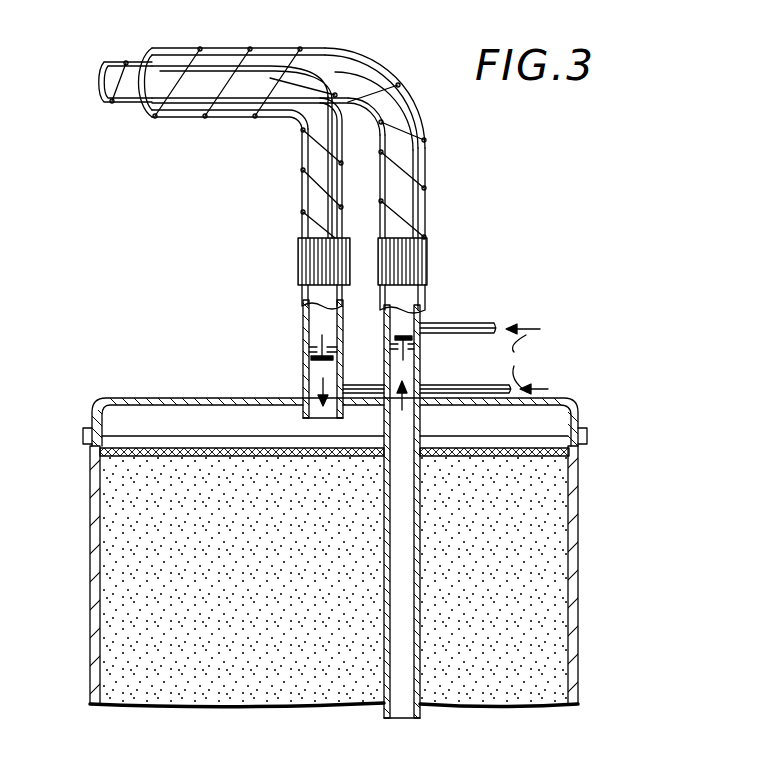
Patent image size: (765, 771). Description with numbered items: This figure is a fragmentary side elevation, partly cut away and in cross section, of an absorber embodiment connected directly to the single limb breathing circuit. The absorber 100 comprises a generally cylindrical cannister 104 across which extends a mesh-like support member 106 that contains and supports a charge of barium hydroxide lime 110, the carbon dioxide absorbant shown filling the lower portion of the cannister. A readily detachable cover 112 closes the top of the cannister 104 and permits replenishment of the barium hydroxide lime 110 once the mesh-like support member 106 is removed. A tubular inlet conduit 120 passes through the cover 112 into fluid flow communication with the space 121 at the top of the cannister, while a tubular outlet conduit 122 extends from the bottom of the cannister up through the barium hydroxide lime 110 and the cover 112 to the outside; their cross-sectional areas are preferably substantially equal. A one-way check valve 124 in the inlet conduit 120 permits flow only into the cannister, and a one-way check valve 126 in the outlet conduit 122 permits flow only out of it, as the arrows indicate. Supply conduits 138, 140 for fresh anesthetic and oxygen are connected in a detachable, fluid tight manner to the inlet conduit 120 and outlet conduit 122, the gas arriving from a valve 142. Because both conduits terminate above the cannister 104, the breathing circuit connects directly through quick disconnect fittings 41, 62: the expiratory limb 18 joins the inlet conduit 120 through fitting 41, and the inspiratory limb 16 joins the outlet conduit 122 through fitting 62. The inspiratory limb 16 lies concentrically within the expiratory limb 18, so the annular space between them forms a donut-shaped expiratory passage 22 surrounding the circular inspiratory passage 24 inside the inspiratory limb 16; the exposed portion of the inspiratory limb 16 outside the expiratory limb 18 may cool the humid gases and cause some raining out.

The inspiratory limb 16 is at (417, 116).
The expiratory limb 18 is at (198, 113).
The expiratory passage 22 is at (191, 54).
The inspiratory passage 24 is at (364, 76).
The quick disconnect fitting 41 is at (305, 262).
The quick disconnect fitting 62 is at (430, 268).
The absorber 100 is at (80, 605).
The cannister 104 is at (90, 513).
The mesh-like support member 106 is at (172, 450).
The barium hydroxide lime 110 is at (132, 657).
The cover 112 is at (90, 412).
The inlet conduit 120 is at (303, 373).
The space 121 is at (238, 432).
The outlet conduit 122 is at (423, 307).
The one-way check valve 124 is at (318, 345).
The one-way check valve 126 is at (406, 352).
The supply conduit 138 is at (486, 397).
The supply conduit 140 is at (478, 323).
The valve 142 is at (617, 363).